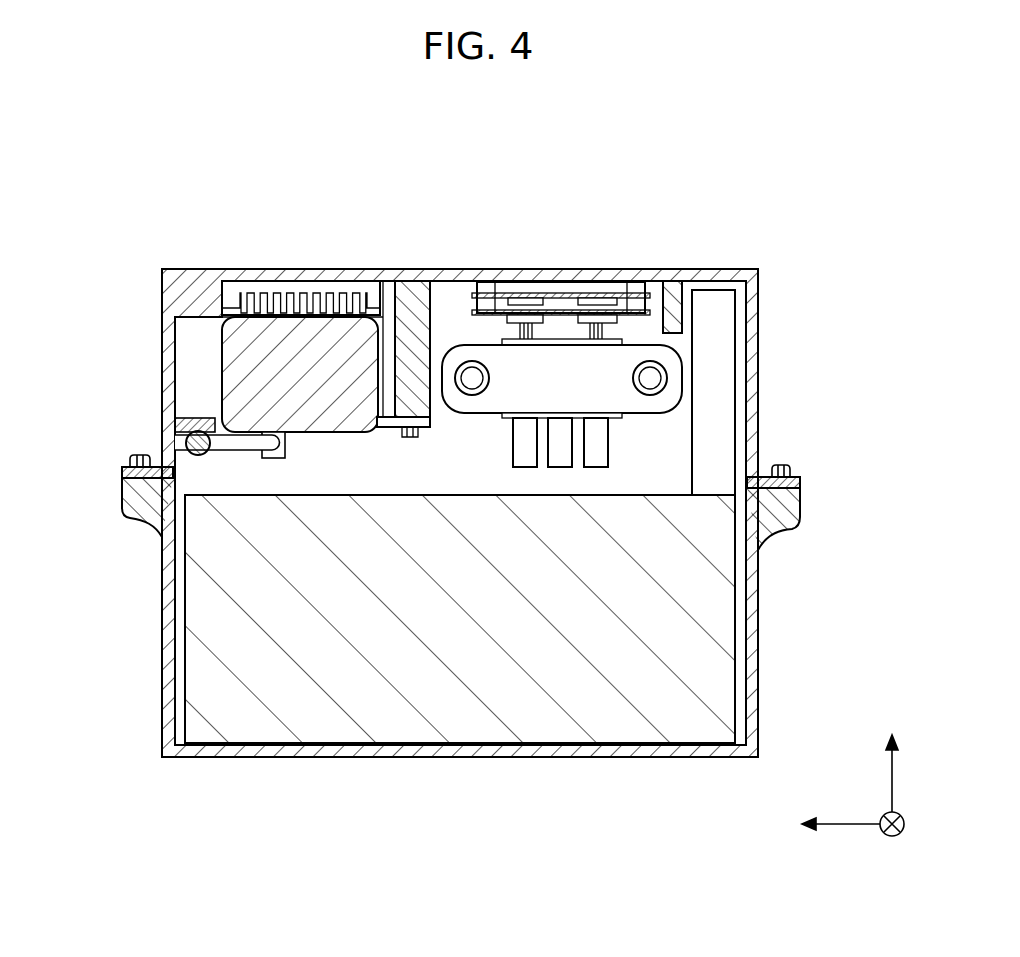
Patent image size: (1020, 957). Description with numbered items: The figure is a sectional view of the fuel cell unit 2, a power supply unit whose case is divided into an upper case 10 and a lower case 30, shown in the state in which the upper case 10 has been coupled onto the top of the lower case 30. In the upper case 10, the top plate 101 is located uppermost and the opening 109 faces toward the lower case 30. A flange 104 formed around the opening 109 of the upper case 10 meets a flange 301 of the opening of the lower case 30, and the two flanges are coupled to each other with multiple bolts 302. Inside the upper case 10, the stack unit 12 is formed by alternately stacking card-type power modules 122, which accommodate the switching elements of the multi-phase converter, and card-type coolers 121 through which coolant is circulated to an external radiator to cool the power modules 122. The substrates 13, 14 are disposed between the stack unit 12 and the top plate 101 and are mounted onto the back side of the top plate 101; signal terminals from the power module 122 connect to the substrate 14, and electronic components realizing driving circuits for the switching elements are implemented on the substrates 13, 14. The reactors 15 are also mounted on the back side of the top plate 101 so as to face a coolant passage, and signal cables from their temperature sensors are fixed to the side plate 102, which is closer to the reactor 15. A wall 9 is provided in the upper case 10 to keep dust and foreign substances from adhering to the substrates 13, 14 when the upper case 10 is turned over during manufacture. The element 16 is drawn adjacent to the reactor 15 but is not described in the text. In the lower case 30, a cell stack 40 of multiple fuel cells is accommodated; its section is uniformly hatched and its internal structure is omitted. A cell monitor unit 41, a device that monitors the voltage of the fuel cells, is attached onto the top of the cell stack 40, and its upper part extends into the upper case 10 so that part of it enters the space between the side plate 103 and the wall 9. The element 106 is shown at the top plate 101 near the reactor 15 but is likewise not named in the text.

The fuel cell unit 2 is at (764, 201).
The wall 9 is at (689, 296).
The upper case 10 is at (155, 243).
The stack unit 12 is at (648, 423).
The substrate 13 is at (468, 307).
The substrate 14 is at (460, 310).
The reactor 15 is at (232, 345).
The partition wall 16 is at (438, 305).
The lower case 30 is at (150, 781).
The cell stack 40 is at (371, 722).
The cell monitor unit 41 is at (725, 323).
The top plate 101 is at (576, 291).
The side plate 102 is at (168, 380).
The side plate 103 is at (760, 292).
The flange 104 is at (123, 470).
The heat sink 106 is at (233, 292).
The opening 109 is at (208, 497).
The cooler 121 is at (673, 382).
The power module 122 is at (621, 418).
The flange 301 is at (130, 498).
The bolt 302 is at (135, 455).